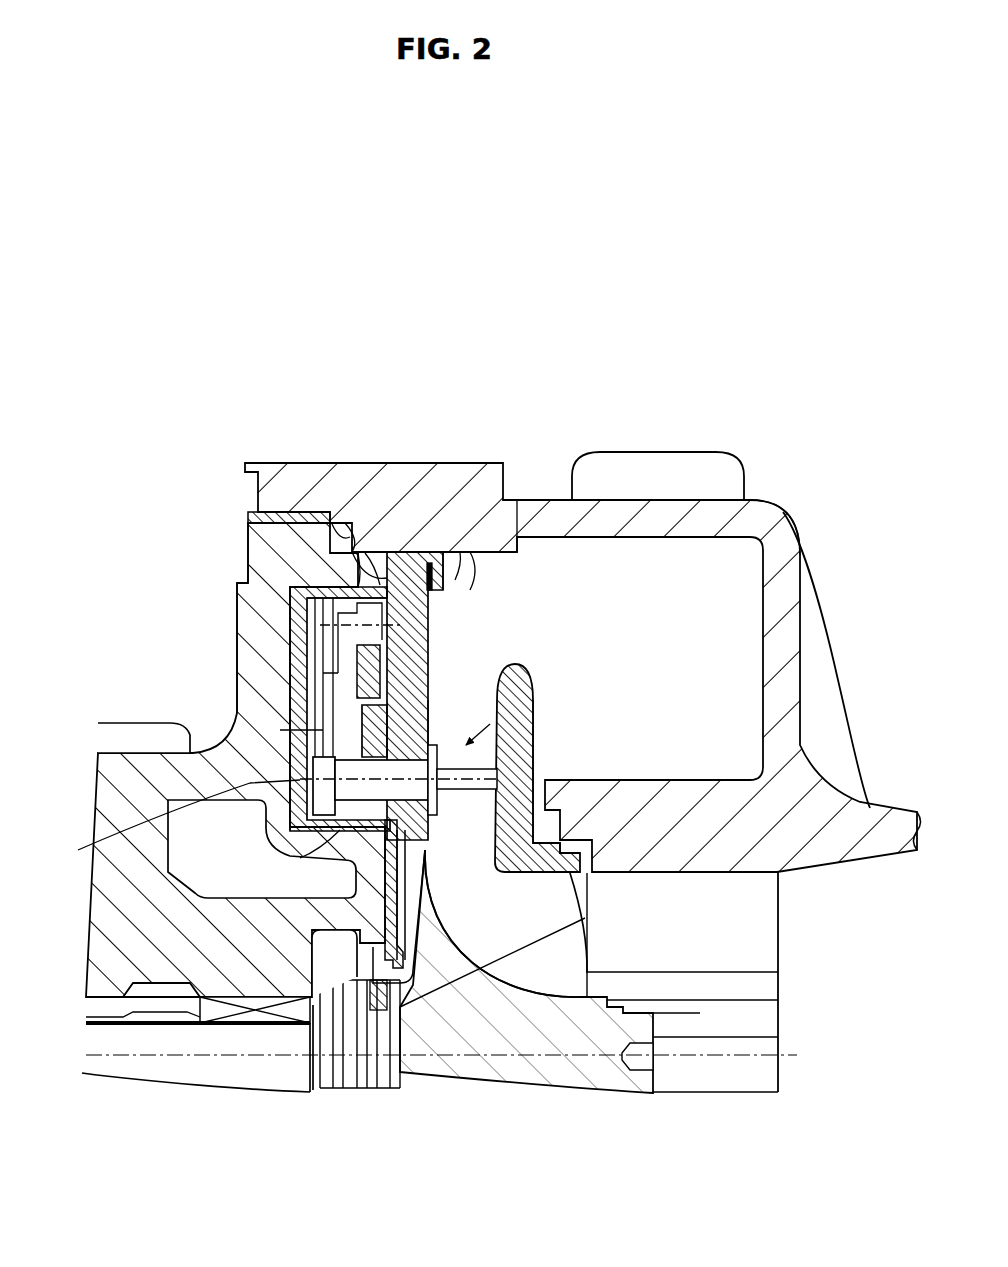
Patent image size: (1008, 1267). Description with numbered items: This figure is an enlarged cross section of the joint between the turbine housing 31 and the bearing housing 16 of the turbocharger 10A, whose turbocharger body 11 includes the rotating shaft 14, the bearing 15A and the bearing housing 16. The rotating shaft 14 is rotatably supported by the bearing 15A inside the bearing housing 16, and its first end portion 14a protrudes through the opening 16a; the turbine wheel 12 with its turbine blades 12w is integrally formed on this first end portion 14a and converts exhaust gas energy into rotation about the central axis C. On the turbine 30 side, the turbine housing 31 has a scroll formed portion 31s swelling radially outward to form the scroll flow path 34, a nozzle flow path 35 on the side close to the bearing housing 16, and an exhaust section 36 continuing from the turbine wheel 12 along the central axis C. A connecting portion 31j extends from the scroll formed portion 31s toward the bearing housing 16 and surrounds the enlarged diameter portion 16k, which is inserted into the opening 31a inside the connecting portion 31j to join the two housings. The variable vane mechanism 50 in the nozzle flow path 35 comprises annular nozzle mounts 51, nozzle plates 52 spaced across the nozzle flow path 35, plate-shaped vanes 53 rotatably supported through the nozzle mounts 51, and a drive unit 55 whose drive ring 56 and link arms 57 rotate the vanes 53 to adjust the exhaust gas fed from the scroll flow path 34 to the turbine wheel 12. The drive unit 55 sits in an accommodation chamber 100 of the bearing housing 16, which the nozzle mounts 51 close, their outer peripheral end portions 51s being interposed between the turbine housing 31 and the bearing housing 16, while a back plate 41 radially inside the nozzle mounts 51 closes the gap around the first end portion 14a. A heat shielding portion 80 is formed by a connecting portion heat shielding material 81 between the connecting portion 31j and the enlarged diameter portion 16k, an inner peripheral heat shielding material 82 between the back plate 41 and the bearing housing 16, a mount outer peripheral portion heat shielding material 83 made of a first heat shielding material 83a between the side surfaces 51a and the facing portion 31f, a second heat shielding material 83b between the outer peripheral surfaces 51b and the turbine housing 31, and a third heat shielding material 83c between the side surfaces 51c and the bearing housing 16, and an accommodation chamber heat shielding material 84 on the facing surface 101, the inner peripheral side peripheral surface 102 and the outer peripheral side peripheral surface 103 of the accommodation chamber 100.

The turbocharger 10A is at (700, 262).
The turbocharger body 11 is at (175, 648).
The turbine wheel 12 is at (778, 970).
The turbine blades 12w is at (778, 938).
The rotating shaft 14 is at (140, 1017).
The first end portion 14a is at (656, 1027).
The bearing 15A is at (260, 1010).
The bearing housing 16 is at (235, 682).
The opening 16a is at (545, 952).
The enlarged diameter portion 16k is at (248, 545).
The turbine 30 is at (772, 486).
The turbine housing 31 is at (810, 610).
The opening 31a is at (308, 462).
The facing portion 31f is at (503, 520).
The connecting portion 31j is at (280, 462).
The scroll formed portion 31s is at (660, 455).
The scroll flow path 34 is at (793, 523).
The nozzle flow path 35 is at (612, 458).
The exhaust section 36 is at (810, 876).
The back plate 41 is at (430, 885).
The variable vane mechanism 50 is at (548, 720).
The nozzle mount 51 is at (470, 605).
The side surfaces 51a is at (440, 706).
The outer peripheral surfaces 51b is at (420, 555).
The side surfaces 51c is at (295, 618).
The outer peripheral end portions 51s is at (445, 552).
The nozzle plate 52 is at (533, 700).
The vane 53 is at (540, 748).
The drive unit 55 is at (330, 652).
The drive ring 56 is at (298, 712).
The link arm 57 is at (190, 745).
The heat shielding portion 80 is at (220, 710).
The connecting portion heat shielding material 81 is at (250, 518).
The inner peripheral heat shielding material 82 is at (372, 990).
The mount outer peripheral portion heat shielding material 83 is at (395, 548).
The first heat shielding material 83a is at (478, 556).
The second heat shielding material 83b is at (470, 553).
The third heat shielding material 83c is at (380, 548).
The accommodation chamber heat shielding material 84 is at (250, 572).
The accommodation chamber 100 is at (165, 823).
The facing surface 101 is at (300, 836).
The inner peripheral side peripheral surface 102 is at (345, 830).
The outer peripheral side peripheral surface 103 is at (335, 520).
The central axis C is at (752, 1057).